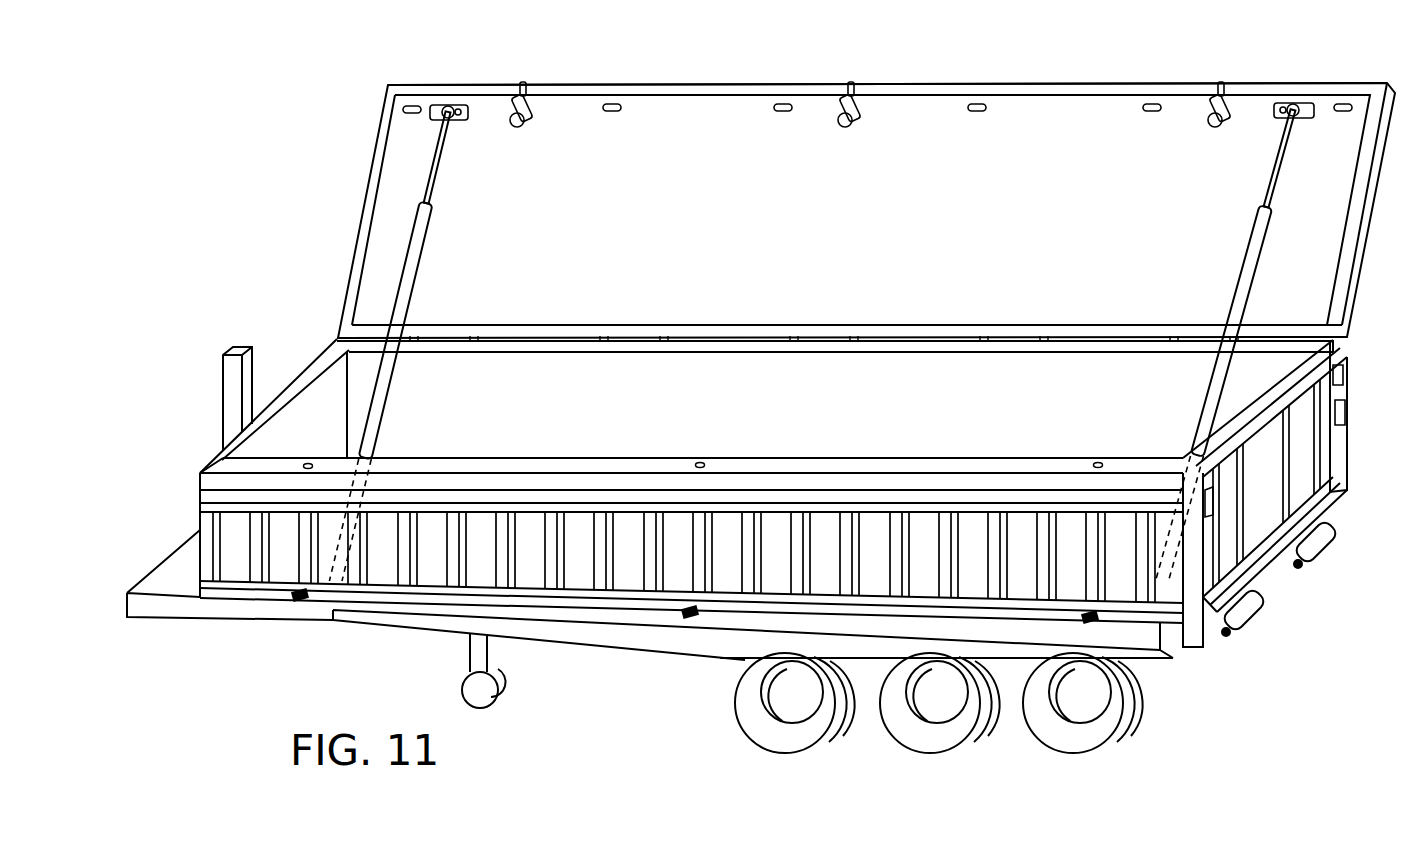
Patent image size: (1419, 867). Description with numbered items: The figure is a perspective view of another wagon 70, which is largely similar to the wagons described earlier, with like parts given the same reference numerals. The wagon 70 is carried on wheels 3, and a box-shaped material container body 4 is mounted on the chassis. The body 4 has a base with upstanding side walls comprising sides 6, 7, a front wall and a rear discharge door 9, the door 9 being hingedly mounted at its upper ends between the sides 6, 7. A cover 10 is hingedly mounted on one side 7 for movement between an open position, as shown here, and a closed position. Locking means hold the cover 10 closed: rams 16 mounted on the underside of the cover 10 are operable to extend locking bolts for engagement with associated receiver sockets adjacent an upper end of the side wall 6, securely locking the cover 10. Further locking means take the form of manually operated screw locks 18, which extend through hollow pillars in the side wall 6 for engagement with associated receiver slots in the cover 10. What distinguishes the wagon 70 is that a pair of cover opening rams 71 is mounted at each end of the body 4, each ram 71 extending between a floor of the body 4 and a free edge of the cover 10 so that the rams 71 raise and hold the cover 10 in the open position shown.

The wheels 3 is at (753, 717).
The material container body 4 is at (290, 376).
The side 6 is at (758, 460).
The side 7 is at (838, 338).
The rear discharge door 9 is at (1265, 520).
The cover 10 is at (1122, 82).
The rams 16 is at (527, 124).
The screw locks 18 is at (693, 620).
The wagon 70 is at (966, 75).
The cover opening rams 71 is at (423, 273).